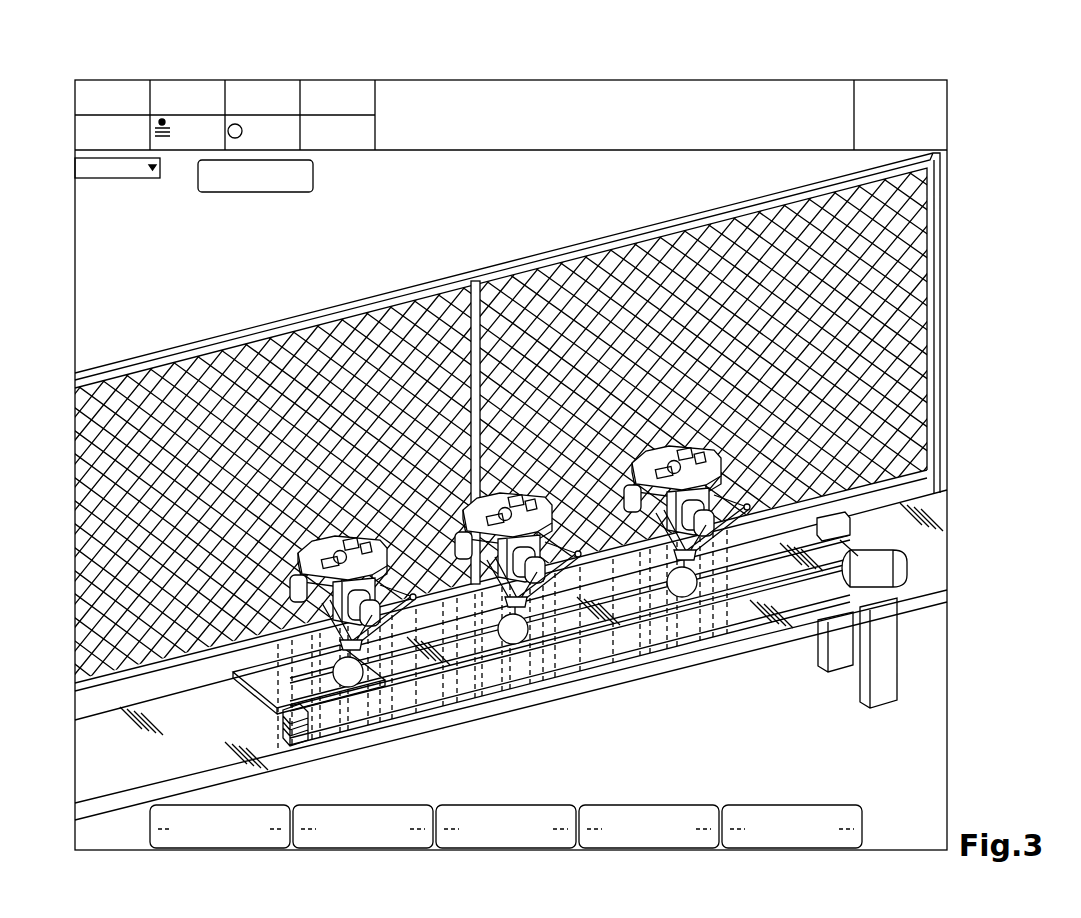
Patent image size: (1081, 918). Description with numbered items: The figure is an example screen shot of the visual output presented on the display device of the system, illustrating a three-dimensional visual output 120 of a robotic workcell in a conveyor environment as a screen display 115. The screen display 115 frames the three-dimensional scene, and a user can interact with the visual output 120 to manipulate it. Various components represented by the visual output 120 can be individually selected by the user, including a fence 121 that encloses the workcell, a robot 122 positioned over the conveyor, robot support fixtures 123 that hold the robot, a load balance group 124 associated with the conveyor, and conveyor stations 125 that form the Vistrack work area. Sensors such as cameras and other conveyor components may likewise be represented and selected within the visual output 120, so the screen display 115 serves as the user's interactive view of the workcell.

The screen display 115 is at (972, 76).
The three-dimensional visual output 120 is at (952, 228).
The fence 121 is at (471, 280).
The robot 122 is at (262, 684).
The robot support fixtures 123 is at (305, 588).
The load balance group 124 is at (760, 565).
The conveyor stations 125 is at (283, 722).